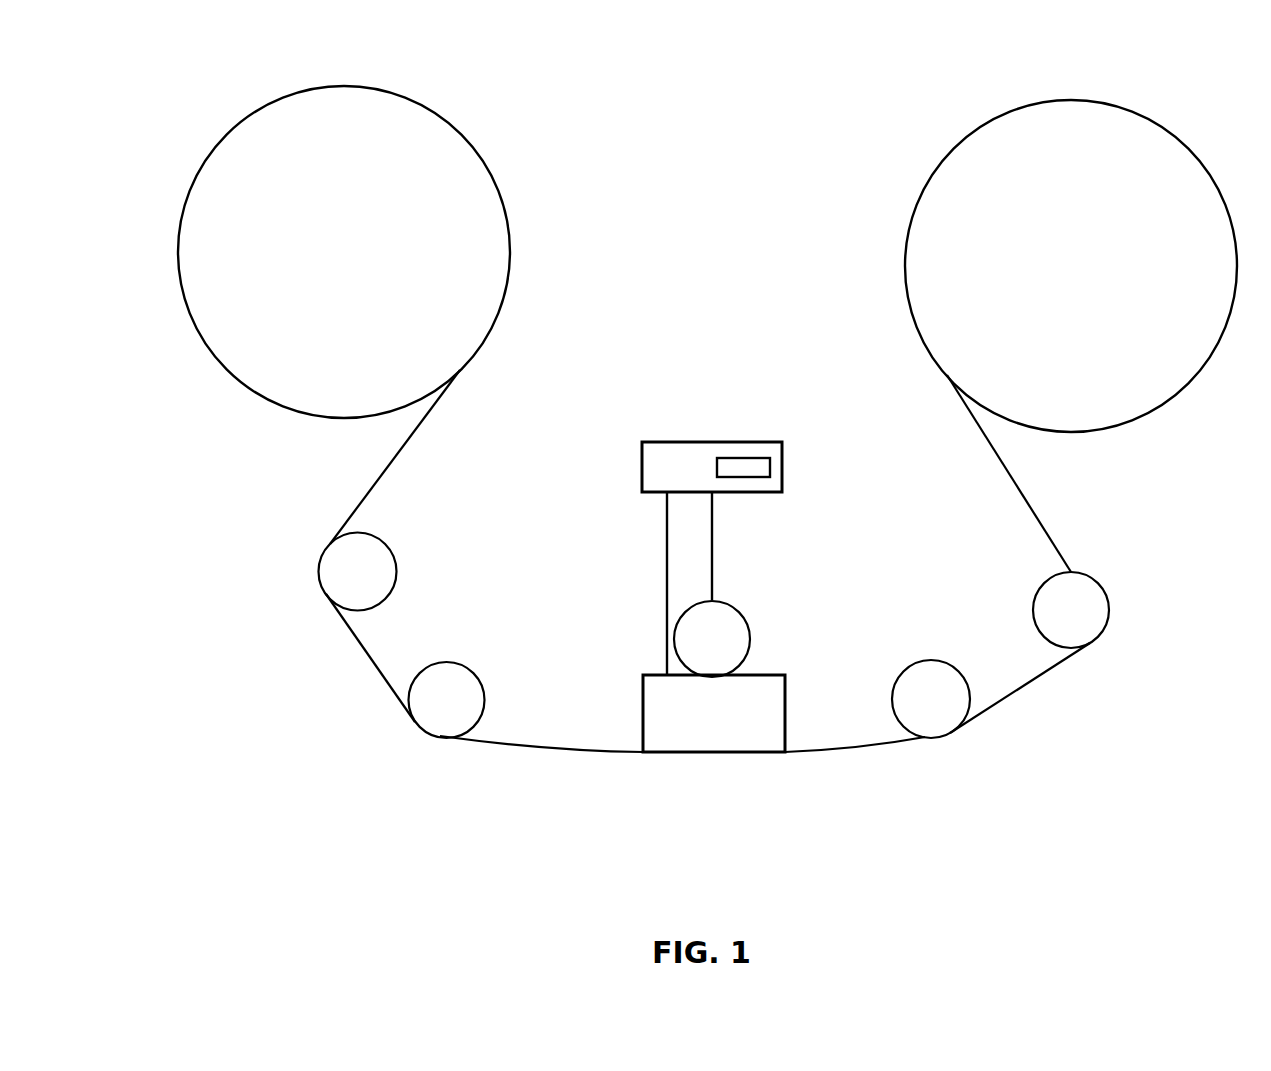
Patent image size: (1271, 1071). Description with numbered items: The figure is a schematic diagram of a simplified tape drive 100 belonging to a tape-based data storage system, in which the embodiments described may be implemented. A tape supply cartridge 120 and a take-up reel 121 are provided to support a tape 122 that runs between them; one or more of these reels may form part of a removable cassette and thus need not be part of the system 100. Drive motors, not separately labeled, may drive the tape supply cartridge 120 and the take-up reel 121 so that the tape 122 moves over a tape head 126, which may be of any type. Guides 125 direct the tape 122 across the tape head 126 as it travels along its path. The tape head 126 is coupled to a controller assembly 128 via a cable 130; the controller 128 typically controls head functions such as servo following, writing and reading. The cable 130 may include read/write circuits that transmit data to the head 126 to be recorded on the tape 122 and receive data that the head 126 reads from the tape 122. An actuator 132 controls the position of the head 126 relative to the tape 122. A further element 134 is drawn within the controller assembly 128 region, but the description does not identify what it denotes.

The tape drive 100 is at (293, 484).
The tape supply cartridge 120 is at (507, 228).
The take-up reel 121 is at (1175, 397).
The tape 122 is at (552, 745).
The guides 125 is at (447, 661).
The tape head 126 is at (785, 712).
The controller assembly 128 is at (712, 442).
The cable 130 is at (667, 635).
The actuator 132 is at (740, 611).
The sensor 134 is at (757, 458).